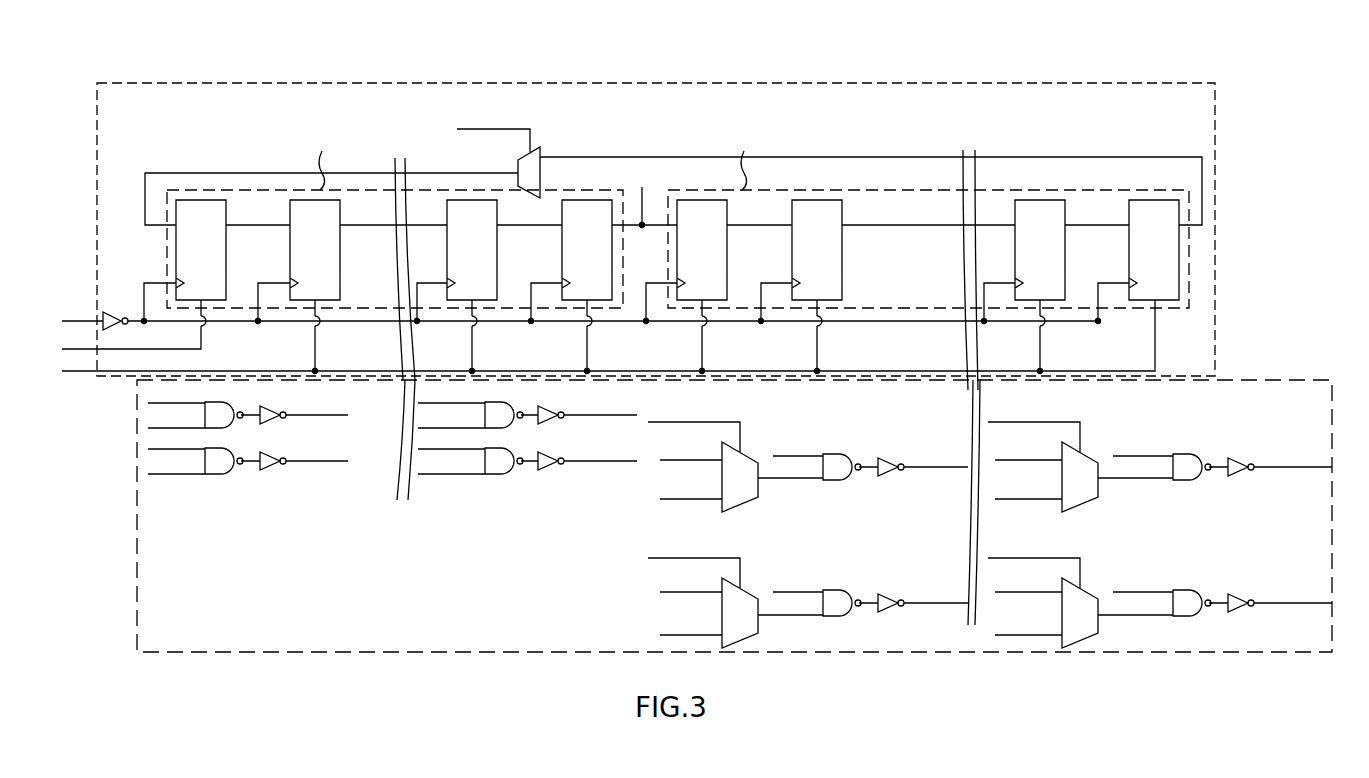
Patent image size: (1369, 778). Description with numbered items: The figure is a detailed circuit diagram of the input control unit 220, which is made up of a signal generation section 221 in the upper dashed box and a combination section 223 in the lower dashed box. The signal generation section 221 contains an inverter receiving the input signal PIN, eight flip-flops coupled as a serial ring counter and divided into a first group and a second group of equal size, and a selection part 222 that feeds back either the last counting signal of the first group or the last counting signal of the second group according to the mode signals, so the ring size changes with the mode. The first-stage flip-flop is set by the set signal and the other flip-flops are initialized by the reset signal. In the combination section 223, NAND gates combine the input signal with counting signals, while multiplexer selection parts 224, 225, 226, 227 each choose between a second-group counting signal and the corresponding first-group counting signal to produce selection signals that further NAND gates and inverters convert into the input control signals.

The input control unit 220 is at (712, 62).
The signal generation section 221 is at (1215, 290).
The selection part 222 is at (536, 146).
The combination section 223 is at (1252, 380).
The selection part 224 is at (750, 453).
The selection part 225 is at (750, 589).
The selection part 226 is at (1090, 453).
The selection part 227 is at (1090, 589).